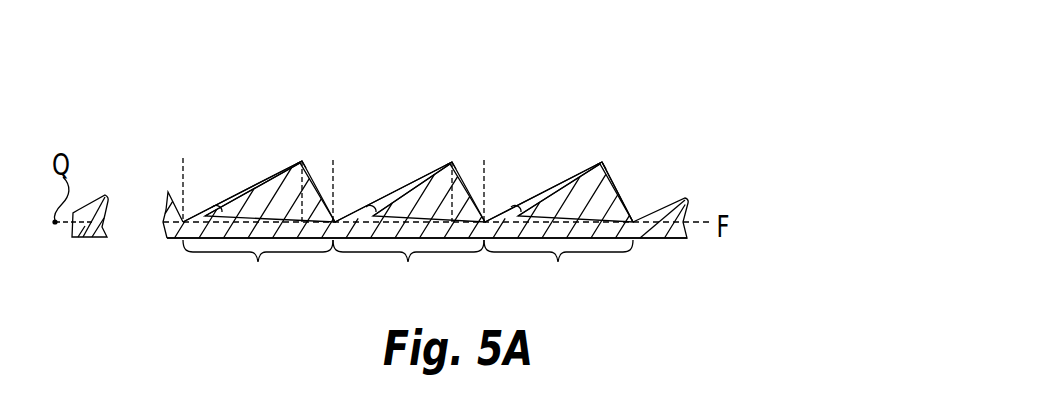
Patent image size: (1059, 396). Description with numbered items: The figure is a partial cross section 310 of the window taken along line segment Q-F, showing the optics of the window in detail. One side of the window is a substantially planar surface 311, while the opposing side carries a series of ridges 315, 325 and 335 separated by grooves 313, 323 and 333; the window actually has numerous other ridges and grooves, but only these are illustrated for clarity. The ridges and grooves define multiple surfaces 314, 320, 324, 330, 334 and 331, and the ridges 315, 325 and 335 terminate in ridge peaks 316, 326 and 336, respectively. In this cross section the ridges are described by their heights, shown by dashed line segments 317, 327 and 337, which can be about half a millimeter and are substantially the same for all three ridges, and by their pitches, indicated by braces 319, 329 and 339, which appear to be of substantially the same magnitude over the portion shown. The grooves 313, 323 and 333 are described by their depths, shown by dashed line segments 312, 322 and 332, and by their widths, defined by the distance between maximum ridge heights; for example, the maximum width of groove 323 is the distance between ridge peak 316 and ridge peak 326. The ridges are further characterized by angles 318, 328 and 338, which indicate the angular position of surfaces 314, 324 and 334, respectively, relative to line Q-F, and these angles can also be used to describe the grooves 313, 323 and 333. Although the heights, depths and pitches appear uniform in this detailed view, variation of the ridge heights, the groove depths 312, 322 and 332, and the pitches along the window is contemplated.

The partial cross section 310 is at (671, 99).
The substantially planar surface 311 is at (308, 240).
The dashed line segment indicating groove depth 312 is at (194, 161).
The groove 313 is at (217, 130).
The surface 314 is at (221, 205).
The ridge 315 is at (262, 168).
The ridge peak 316 is at (309, 163).
The dashed line segment indicating ridge height 317 is at (302, 165).
The angle 318 is at (241, 209).
The brace indicating ridge pitch 319 is at (258, 269).
The surface 320 is at (307, 162).
The dashed line segment indicating groove depth 322 is at (334, 162).
The groove 323 is at (366, 124).
The surface 324 is at (380, 206).
The ridge 325 is at (412, 170).
The ridge peak 326 is at (453, 162).
The dashed line segment indicating ridge height 327 is at (448, 196).
The angle 328 is at (391, 209).
The brace indicating ridge pitch 329 is at (408, 269).
The surface 330 is at (457, 162).
The surface 331 is at (612, 196).
The dashed line segment indicating groove depth 332 is at (485, 162).
The groove 333 is at (517, 128).
The surface 334 is at (525, 207).
The ridge 335 is at (560, 170).
The ridge peak 336 is at (603, 164).
The dashed line segment indicating ridge height 337 is at (596, 196).
The angle 338 is at (541, 209).
The brace indicating ridge pitch 339 is at (558, 269).